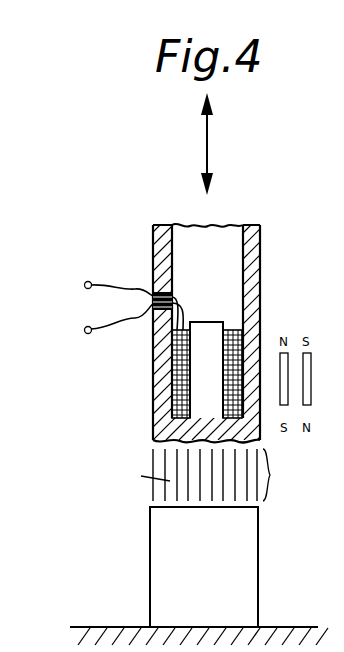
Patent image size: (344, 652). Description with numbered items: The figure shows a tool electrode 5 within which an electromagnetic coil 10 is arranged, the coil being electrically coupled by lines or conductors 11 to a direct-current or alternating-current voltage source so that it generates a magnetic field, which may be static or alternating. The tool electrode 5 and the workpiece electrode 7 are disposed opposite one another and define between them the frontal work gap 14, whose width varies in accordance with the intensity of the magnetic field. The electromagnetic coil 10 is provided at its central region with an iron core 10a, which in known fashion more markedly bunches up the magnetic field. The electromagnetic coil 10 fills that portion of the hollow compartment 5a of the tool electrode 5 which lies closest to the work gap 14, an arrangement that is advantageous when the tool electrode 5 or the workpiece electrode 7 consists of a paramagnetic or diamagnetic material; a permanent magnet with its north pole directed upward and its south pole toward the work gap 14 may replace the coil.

The tool electrode 5 is at (158, 250).
The hollow compartment 5a is at (188, 240).
The electromagnetic coil 10 is at (229, 333).
The iron core 10a is at (207, 373).
The lines or conductors 11 is at (80, 288).
The frontal work gap 14 is at (211, 475).
The workpiece electrode 7 is at (246, 559).